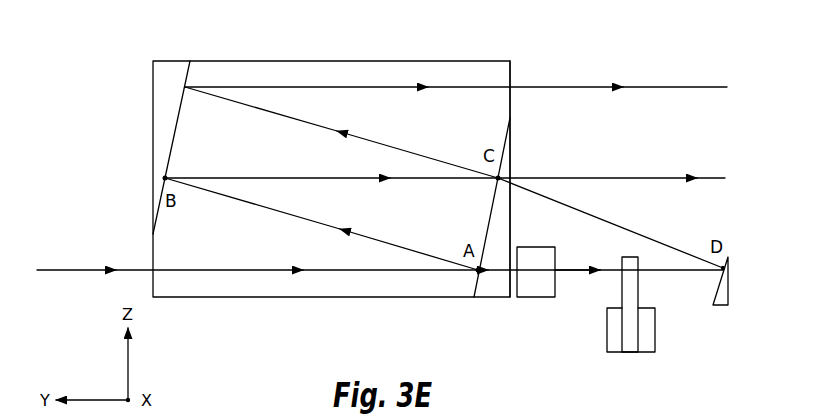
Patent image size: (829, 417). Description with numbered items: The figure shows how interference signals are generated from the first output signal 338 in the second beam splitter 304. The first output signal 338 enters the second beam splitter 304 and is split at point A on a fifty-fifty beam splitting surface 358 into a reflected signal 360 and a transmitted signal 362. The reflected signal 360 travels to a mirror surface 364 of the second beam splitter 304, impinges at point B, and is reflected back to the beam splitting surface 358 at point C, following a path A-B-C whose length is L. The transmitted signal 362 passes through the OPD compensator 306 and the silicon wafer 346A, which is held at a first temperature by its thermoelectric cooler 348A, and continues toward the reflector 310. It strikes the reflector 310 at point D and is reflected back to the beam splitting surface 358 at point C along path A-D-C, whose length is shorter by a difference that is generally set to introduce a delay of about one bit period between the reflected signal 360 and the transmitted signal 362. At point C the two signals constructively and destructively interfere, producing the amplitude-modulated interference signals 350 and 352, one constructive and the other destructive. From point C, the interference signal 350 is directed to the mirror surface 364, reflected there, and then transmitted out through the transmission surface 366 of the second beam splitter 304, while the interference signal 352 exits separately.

The second beam splitter 304 is at (340, 61).
The transmission surface 366 is at (512, 72).
The mirror surface 364 is at (171, 143).
The 50:50 beam splitting surface 358 is at (493, 213).
The interference signal 350 is at (647, 87).
The interference signal 352 is at (644, 178).
The reflected signal 360 is at (362, 178).
The first output signal 338 is at (70, 268).
The OPD compensator 306 is at (532, 297).
The transmitted signal 362 is at (578, 272).
The silicon wafer 346A is at (640, 287).
The thermoelectric cooler 348A is at (656, 342).
The reflector 310 is at (731, 295).